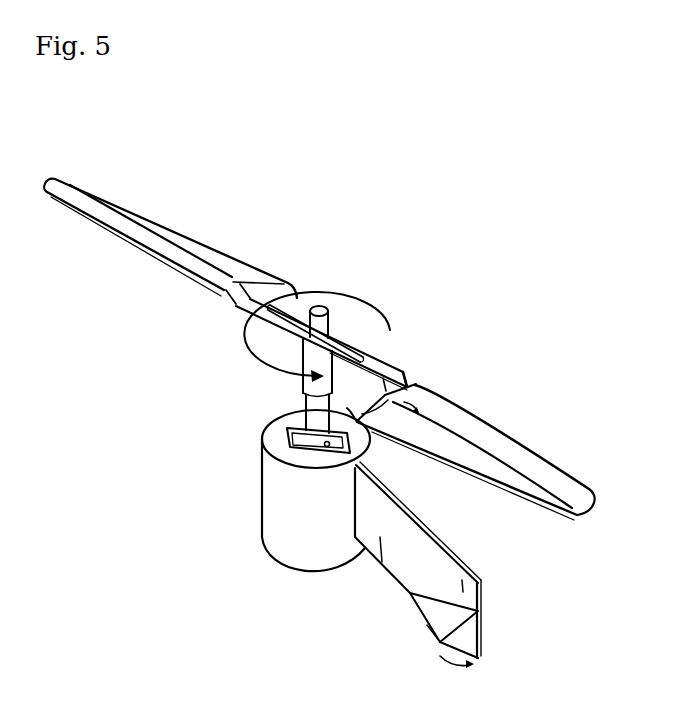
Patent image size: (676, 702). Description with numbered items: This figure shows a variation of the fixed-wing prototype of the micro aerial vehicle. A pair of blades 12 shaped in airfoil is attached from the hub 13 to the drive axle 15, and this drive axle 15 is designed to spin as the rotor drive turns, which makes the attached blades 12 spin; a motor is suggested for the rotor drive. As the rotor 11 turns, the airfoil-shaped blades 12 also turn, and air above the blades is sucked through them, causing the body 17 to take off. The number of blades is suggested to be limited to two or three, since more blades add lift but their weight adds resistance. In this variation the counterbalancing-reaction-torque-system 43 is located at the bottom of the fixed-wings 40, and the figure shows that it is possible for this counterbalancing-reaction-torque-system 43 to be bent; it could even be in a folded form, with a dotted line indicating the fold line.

The rotor 11 is at (174, 182).
The blades 12 is at (514, 455).
The hub 13 is at (330, 335).
The drive axle 15 is at (295, 409).
The body 17 is at (293, 532).
The fixed-wings 40 is at (376, 569).
The counterbalancing-reaction-torque-system 43 is at (440, 620).